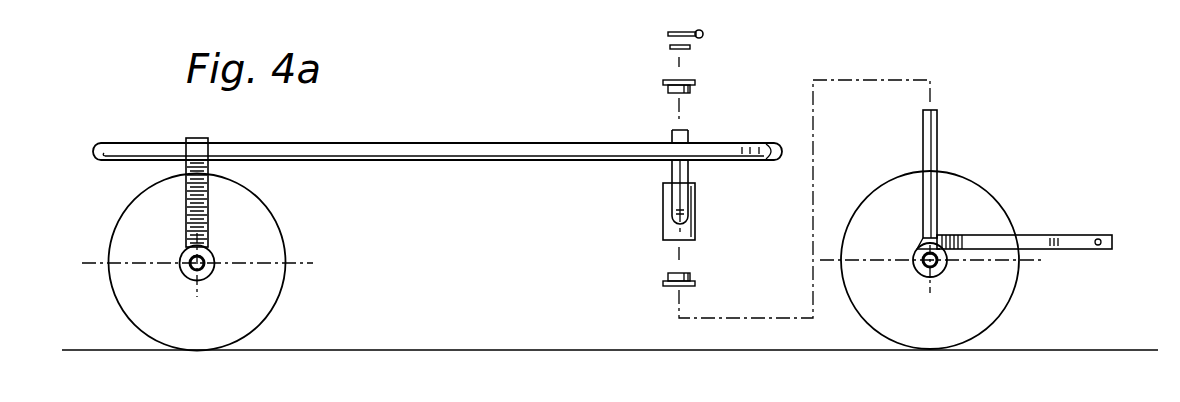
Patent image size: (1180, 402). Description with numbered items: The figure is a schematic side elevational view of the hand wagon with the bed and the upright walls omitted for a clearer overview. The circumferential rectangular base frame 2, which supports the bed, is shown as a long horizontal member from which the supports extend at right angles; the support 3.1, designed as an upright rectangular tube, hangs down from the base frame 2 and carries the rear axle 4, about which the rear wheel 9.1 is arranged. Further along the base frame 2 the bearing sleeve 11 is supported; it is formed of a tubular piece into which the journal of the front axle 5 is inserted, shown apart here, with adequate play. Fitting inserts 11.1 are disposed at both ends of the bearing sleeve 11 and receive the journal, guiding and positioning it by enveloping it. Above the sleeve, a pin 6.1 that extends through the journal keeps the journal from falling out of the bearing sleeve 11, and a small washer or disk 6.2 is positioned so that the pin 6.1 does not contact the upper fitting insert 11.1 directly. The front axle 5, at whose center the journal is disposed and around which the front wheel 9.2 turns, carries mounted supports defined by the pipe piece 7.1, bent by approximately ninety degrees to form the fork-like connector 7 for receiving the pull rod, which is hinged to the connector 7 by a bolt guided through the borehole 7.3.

The base frame 2 is at (105, 160).
The support 3.1 is at (210, 200).
The rear axle 4 is at (191, 271).
The first wheel 9.1 is at (268, 247).
The pin 6.1 is at (668, 33).
The pin sleeve 6.2 is at (690, 48).
The bearing sleeve 11 is at (663, 200).
The fitting insert 11.1 is at (663, 84).
The second wheel 9.2 is at (902, 246).
The front axle 5 is at (920, 268).
The fork-like connector 7 is at (1112, 232).
The pipe piece 7.1 is at (1038, 235).
The borehole 7.3 is at (1098, 250).